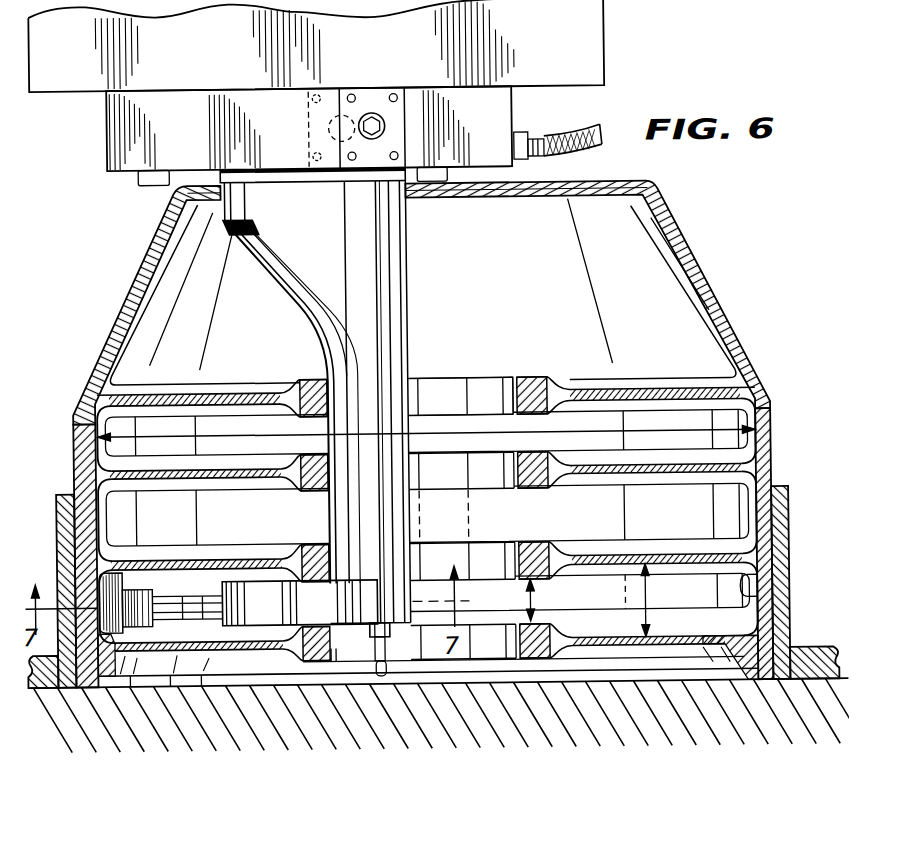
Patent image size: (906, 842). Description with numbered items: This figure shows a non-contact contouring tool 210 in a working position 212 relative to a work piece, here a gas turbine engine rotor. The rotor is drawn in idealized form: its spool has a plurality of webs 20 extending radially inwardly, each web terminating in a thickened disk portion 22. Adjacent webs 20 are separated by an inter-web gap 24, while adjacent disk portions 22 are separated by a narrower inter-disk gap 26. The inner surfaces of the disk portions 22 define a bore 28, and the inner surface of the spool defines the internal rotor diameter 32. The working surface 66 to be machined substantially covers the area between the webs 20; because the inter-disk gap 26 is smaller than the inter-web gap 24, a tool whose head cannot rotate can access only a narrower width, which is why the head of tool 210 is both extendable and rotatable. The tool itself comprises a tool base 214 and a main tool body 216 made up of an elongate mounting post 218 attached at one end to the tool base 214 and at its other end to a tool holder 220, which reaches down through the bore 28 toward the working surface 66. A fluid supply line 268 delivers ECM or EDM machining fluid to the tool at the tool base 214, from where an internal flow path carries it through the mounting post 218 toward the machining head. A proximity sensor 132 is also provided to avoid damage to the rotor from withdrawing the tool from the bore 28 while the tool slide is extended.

The webs 20 is at (665, 467).
The disk portion 22 is at (563, 397).
The inter-web gap 24 is at (646, 602).
The inter-disk gap 26 is at (535, 597).
The bore 28 is at (505, 391).
The internal rotor diameter 32 is at (482, 432).
The working surface 66 is at (787, 562).
The proximity sensor 132 is at (300, 661).
The non-contact contouring tool 210 is at (631, 121).
The working position 212 is at (436, 217).
The tool base 214 is at (110, 147).
The main tool body 216 is at (266, 295).
The mounting post 218 is at (388, 278).
The tool holder 220 is at (268, 597).
The fluid supply line 268 is at (558, 133).